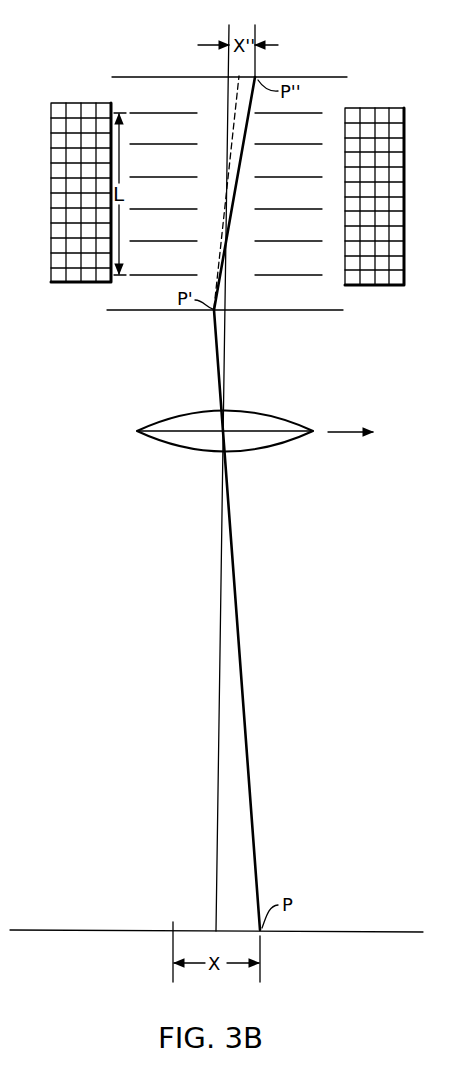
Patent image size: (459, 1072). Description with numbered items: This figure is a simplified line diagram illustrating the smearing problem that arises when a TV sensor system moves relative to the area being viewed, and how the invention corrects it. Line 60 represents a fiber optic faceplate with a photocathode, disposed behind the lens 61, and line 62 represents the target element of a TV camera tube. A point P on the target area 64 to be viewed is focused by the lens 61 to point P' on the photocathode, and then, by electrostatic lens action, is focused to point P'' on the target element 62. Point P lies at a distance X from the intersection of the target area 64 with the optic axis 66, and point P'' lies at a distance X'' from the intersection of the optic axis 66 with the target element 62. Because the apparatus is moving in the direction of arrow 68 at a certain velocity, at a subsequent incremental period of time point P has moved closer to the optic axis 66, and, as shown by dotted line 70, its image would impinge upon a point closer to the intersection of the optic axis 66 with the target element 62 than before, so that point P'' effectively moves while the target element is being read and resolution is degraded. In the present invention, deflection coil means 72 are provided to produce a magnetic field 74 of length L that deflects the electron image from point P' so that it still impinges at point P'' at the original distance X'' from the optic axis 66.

The fiber optic faceplate with a photocathode 60 is at (277, 313).
The lens 61 is at (160, 447).
The target element 62 is at (327, 77).
The target area 64 is at (85, 930).
The optic axis 66 is at (219, 697).
The arrow 68 is at (348, 431).
The dotted line 70 is at (232, 100).
The deflection coil means 72 is at (68, 103).
The magnetic field 74 is at (137, 113).